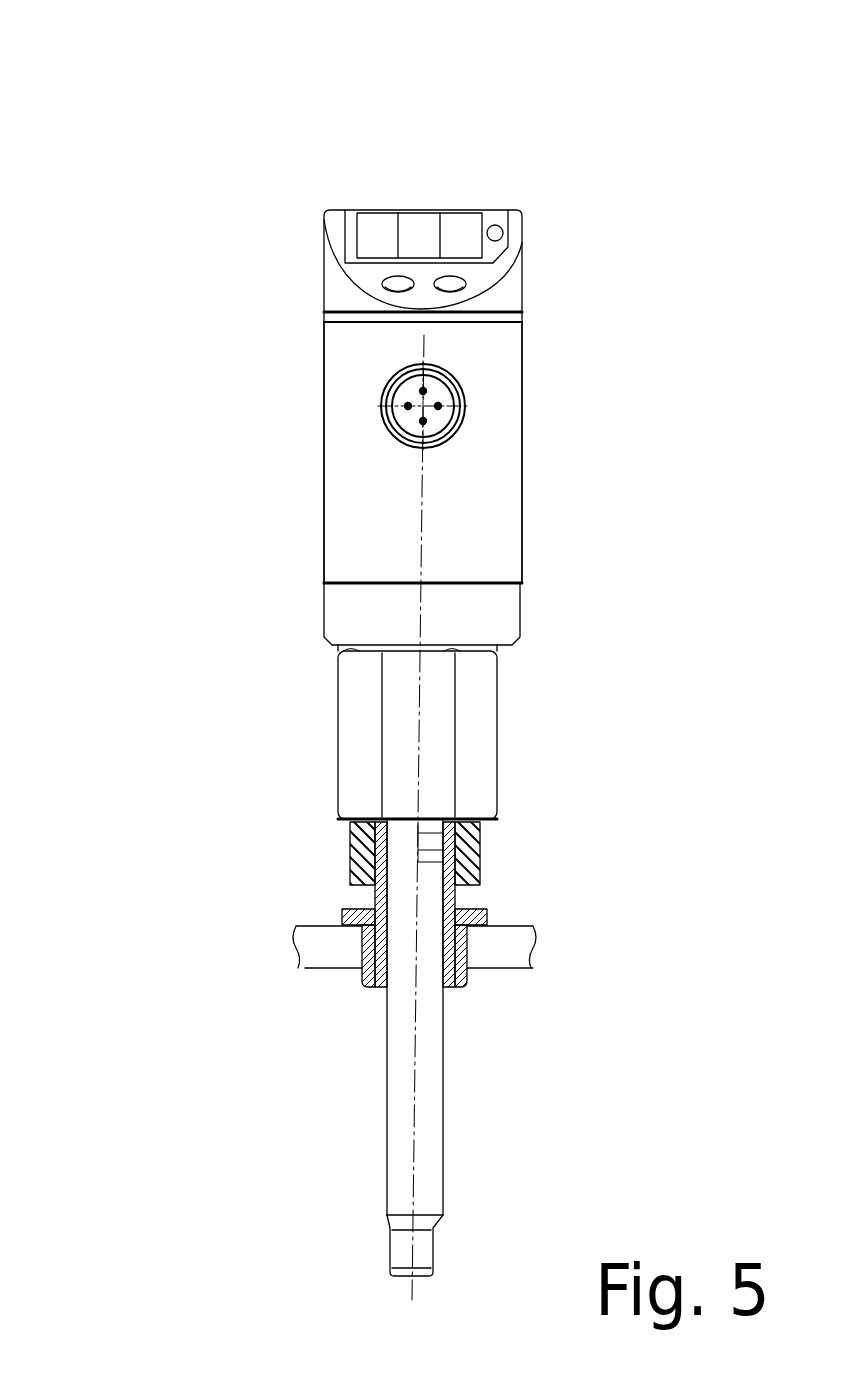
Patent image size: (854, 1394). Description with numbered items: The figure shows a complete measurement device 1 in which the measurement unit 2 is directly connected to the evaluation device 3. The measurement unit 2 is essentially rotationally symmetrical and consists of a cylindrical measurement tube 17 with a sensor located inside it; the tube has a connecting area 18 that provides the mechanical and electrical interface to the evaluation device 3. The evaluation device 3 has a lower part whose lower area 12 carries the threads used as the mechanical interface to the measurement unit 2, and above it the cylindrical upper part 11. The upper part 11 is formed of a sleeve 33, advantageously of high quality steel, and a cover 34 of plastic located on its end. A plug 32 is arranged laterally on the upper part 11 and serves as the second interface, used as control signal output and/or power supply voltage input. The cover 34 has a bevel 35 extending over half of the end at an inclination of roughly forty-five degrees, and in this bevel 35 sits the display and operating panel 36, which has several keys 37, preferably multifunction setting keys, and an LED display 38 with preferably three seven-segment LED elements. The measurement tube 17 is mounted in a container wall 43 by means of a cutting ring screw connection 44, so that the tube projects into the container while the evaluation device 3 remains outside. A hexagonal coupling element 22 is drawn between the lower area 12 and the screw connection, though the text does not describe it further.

The measurement device 1 is at (233, 178).
The measurement unit 2 is at (572, 808).
The evaluation device 3 is at (582, 367).
The upper part 11 is at (502, 466).
The lower area 12 is at (487, 620).
The measurement tube 17 is at (398, 1125).
The connecting area 18 is at (278, 858).
The hexagonal coupling nut 22 is at (480, 741).
The plug 32 is at (410, 391).
The sleeve 33 is at (324, 492).
The cover 34 is at (325, 279).
The bevel 35 is at (518, 210).
The display and operating panel 36 is at (447, 193).
The keys 37 is at (410, 237).
The LED display 38 is at (391, 273).
The container wall 43 is at (512, 952).
The cutting ring screw connection 44 is at (365, 972).